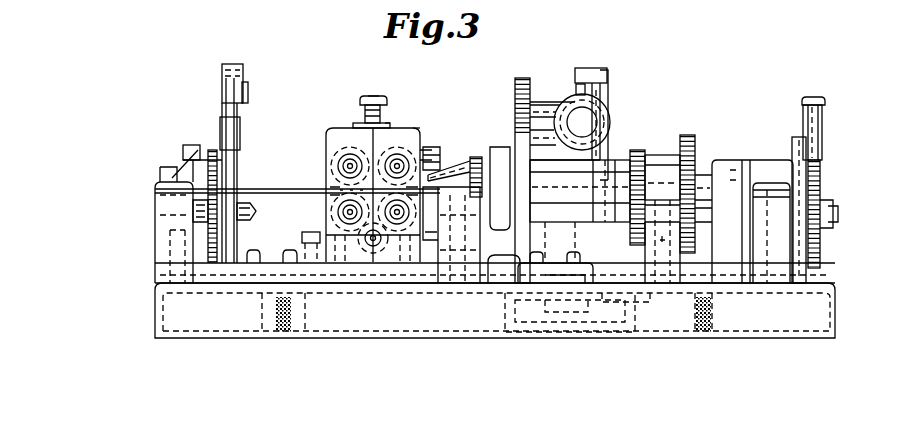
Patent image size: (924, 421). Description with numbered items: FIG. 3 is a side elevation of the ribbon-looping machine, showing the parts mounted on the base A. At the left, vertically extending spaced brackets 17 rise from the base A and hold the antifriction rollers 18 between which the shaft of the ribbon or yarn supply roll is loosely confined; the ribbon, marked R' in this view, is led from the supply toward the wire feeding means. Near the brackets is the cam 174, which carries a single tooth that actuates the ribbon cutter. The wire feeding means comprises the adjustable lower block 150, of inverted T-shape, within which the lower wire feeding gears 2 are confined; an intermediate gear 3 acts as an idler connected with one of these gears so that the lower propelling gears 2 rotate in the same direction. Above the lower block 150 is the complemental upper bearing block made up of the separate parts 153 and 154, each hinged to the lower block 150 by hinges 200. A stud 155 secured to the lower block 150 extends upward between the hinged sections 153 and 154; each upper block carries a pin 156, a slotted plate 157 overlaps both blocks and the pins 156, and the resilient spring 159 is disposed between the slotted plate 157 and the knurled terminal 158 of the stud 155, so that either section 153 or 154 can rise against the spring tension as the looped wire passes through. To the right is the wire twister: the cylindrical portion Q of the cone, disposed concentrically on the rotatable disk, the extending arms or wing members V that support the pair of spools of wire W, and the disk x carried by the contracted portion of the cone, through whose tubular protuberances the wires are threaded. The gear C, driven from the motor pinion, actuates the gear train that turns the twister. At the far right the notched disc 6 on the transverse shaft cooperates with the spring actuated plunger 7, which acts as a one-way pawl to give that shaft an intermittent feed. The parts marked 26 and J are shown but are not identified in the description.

The base A is at (155, 313).
The lower block 150 is at (338, 263).
The housing 26 is at (188, 147).
The cam 174 is at (217, 148).
The brackets 17 is at (240, 69).
The antifriction rollers 18 is at (243, 89).
The wire R' is at (297, 178).
The hinges 200 is at (261, 205).
The gears 2 is at (327, 200).
The intermediate gear 3 is at (302, 236).
The stud 155 is at (367, 137).
The upper block section 154 is at (333, 128).
The knurled terminal 158 is at (375, 94).
The pin 156 is at (360, 123).
The resilient spring 159 is at (392, 126).
The slotted plate 157 is at (413, 130).
The upper block section 153 is at (420, 152).
The disk x is at (428, 174).
The cylindrical portion Q is at (487, 160).
The wing members V is at (540, 105).
The spools of wire W is at (604, 117).
The gear J is at (641, 152).
The gear C is at (694, 136).
The notched disc 6 is at (821, 176).
The spring actuated plunger 7 is at (818, 98).